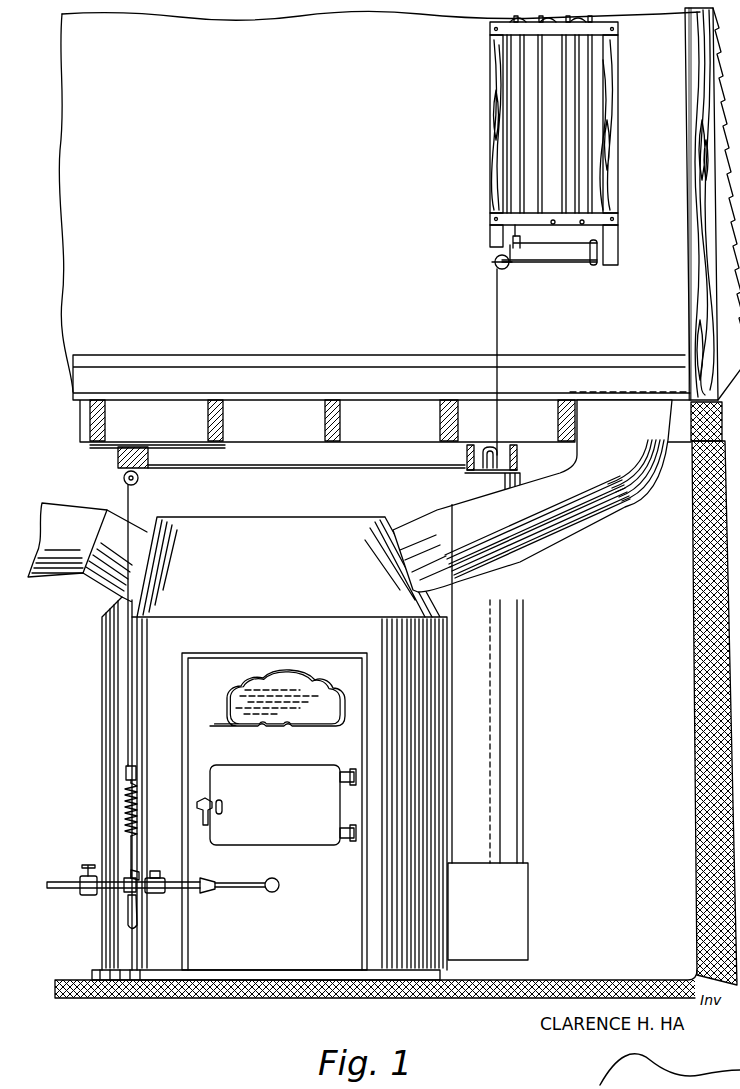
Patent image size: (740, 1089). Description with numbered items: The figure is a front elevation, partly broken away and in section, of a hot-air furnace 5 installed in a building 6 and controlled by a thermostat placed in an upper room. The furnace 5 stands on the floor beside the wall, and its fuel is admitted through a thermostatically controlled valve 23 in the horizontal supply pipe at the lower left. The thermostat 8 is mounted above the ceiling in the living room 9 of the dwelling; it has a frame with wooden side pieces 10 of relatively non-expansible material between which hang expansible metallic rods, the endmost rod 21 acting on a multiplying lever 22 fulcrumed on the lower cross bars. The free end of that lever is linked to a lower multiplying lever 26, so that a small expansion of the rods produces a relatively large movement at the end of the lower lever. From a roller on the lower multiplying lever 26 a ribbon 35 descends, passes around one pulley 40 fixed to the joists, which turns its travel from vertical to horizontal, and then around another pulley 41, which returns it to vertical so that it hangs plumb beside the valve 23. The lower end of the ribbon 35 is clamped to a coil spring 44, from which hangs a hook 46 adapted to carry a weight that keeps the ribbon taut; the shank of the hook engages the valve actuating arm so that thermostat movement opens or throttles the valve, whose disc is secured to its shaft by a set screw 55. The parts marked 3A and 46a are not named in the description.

The furnace 5 is at (420, 783).
The building 6 is at (697, 722).
The thermostat 8 is at (605, 165).
The living room 9 is at (687, 298).
The side piece 10 is at (497, 150).
The endmost rod 21 is at (515, 184).
The multiplying lever 22 is at (572, 243).
The lower multiplying lever 26 is at (569, 265).
The pulley 3A is at (495, 261).
The ribbon 35 is at (497, 320).
The pulley 40 is at (495, 450).
The pulley 41 is at (138, 482).
The set screw 55 is at (125, 697).
The coil spring 44 is at (125, 800).
The hook 46 is at (127, 856).
The valve link 46a is at (135, 876).
The thermostatically controlled valve 23 is at (160, 892).